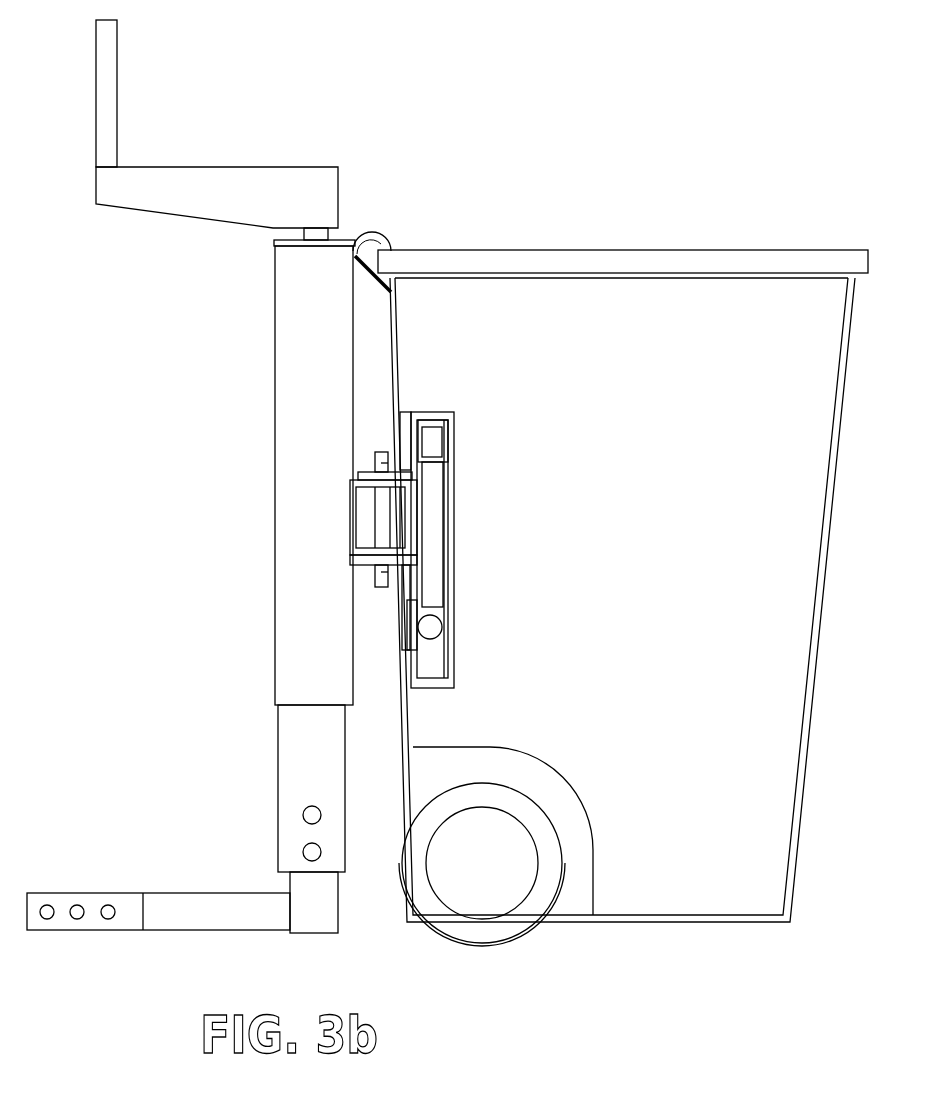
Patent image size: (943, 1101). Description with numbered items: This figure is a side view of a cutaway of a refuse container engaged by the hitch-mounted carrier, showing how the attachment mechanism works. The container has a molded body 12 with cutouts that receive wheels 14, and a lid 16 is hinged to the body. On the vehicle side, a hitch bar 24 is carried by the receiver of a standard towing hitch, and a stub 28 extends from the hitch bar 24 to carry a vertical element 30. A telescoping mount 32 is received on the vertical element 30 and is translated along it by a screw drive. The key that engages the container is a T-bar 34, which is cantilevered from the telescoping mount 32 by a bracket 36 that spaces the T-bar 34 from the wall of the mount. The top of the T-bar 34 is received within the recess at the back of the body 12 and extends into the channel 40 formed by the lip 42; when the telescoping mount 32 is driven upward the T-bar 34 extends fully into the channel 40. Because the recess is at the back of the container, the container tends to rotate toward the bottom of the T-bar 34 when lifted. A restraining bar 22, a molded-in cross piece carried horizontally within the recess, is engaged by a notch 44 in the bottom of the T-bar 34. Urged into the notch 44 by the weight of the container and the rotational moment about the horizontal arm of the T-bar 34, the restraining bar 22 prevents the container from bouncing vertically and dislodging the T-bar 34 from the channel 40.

The molded body 12 is at (808, 777).
The wheels 14 is at (463, 888).
The lid 16 is at (713, 252).
The restraining bar 22 is at (432, 627).
The hitch bar 24 is at (170, 893).
The stub 28 is at (315, 903).
The vertical element 30 is at (295, 755).
The telescoping mount 32 is at (295, 382).
The T-bar 34 is at (433, 525).
The bracket 36 is at (370, 552).
The channel 40 is at (428, 410).
The lip 42 is at (405, 450).
The notch 44 is at (428, 608).